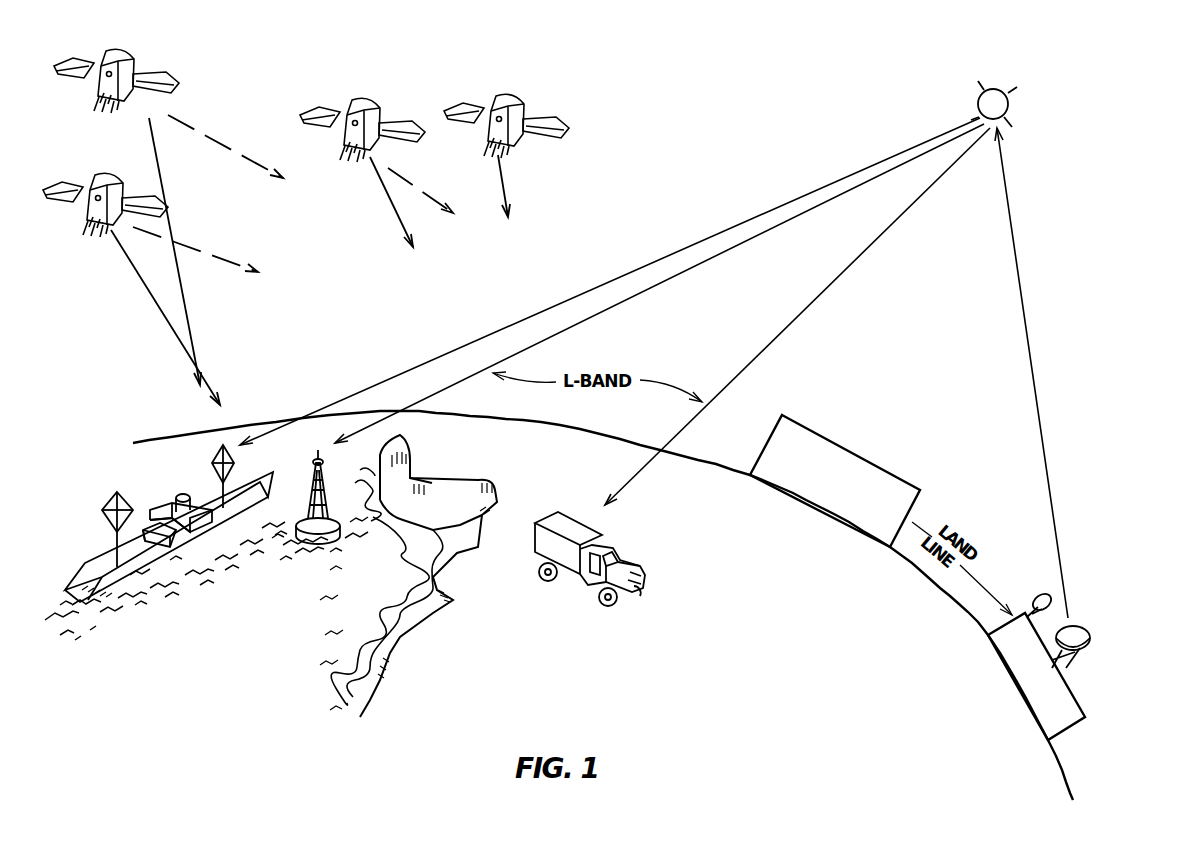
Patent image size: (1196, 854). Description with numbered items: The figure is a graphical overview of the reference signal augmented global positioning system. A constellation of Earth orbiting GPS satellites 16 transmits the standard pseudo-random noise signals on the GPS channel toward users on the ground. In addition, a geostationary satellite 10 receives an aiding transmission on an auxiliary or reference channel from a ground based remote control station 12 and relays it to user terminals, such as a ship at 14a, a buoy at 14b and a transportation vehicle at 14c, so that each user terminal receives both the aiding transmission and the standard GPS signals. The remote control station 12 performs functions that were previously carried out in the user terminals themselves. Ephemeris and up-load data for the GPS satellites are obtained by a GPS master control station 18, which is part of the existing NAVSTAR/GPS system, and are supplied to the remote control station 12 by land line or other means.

The geostationary satellite 10 is at (1000, 88).
The remote control station 12 is at (1077, 697).
The user terminal 14a is at (100, 555).
The user terminal 14b is at (298, 510).
The user terminal 14c is at (570, 515).
The Earth orbiting GPS satellites 16 is at (385, 97).
The GPS master control station 18 is at (855, 455).